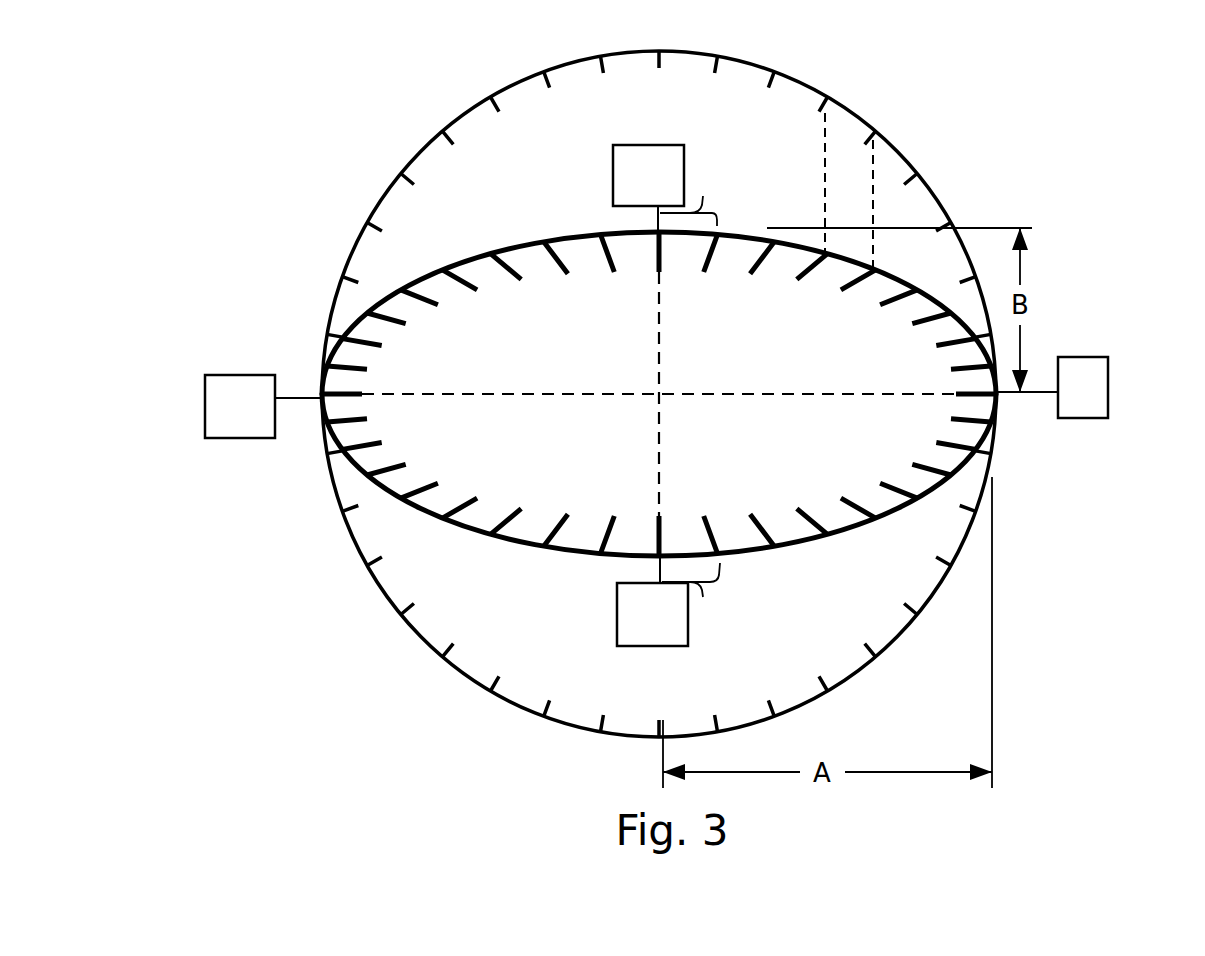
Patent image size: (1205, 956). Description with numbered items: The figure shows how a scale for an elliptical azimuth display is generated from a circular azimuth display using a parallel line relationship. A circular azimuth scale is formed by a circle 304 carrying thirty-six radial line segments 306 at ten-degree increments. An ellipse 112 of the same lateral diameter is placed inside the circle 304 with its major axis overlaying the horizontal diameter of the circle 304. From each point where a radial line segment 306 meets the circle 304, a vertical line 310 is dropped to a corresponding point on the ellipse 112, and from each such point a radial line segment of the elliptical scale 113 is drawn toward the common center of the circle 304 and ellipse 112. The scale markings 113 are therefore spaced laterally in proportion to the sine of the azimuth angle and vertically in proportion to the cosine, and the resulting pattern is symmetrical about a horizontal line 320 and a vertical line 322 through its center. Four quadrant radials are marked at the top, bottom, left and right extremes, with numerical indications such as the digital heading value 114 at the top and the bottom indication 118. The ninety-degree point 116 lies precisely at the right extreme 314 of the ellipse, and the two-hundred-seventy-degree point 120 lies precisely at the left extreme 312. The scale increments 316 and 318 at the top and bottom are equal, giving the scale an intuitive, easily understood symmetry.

The circle 304 is at (422, 148).
The radial line segments 306 is at (547, 83).
The vertical lines 310 is at (873, 177).
The ellipse 112 is at (517, 248).
The elliptical scale 113 is at (790, 283).
The digital heading indication 114 is at (658, 143).
The scale increment at top 316 is at (698, 194).
The horizontal line 320 is at (595, 393).
The vertical line 322 is at (657, 428).
The 270 degree point 120 is at (203, 400).
The left extreme of the ellipse 312 is at (323, 398).
The 90 degree point 116 is at (1108, 400).
The right extreme of the ellipse 314 is at (997, 392).
The bottom quadrant radial indication 118 is at (615, 615).
The scale increment at bottom 318 is at (704, 595).